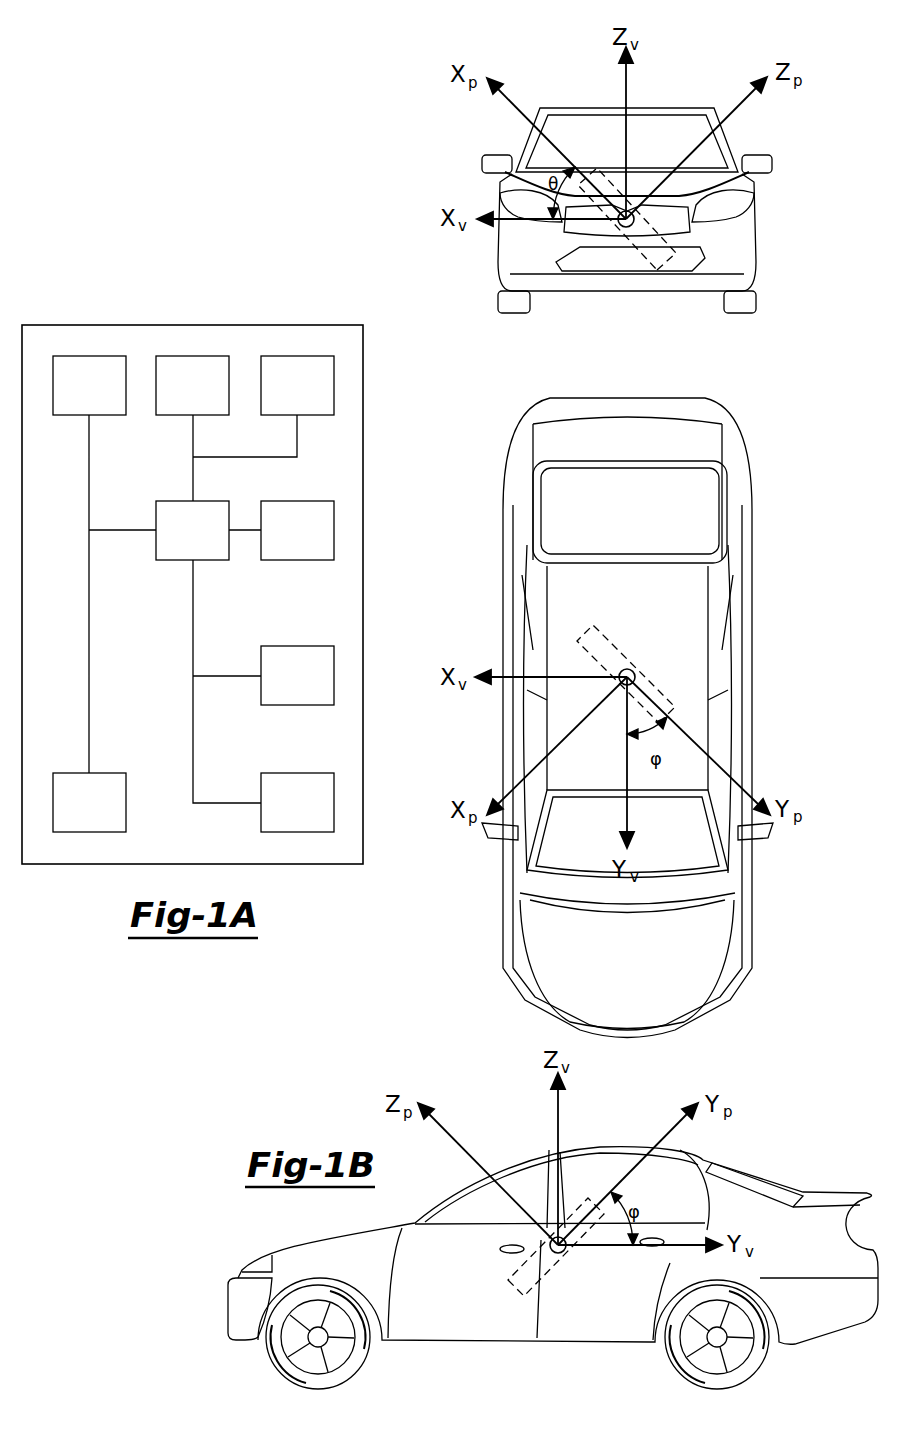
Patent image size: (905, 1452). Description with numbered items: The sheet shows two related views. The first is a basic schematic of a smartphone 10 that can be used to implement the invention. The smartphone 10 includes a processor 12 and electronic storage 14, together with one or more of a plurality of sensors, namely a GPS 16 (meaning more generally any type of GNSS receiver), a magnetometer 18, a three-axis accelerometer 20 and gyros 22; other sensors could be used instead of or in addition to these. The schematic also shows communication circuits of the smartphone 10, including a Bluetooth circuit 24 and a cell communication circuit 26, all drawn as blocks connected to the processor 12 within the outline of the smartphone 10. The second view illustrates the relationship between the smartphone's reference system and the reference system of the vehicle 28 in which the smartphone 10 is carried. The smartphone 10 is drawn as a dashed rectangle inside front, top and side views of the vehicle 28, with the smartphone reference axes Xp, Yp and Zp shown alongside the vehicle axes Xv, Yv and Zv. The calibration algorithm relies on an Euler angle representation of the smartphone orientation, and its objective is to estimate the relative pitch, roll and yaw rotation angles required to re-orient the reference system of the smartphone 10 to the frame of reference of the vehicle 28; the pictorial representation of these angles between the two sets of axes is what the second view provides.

In FIG. 1A, the smartphone 10 is at (136, 325).
In FIG. 1B, the smartphone 10 is at (670, 248).
In FIG. 1A, the processor 12 is at (166, 501).
In FIG. 1A, the electronic storage 14 is at (323, 501).
In FIG. 1A, the GPS 16 is at (89, 356).
In FIG. 1A, the magnetometer 18 is at (193, 356).
In FIG. 1A, the three-axis accelerometer 20 is at (297, 356).
In FIG. 1A, the gyros 22 is at (298, 646).
In FIG. 1A, the Bluetooth 24 is at (298, 773).
In FIG. 1A, the cell communication circuit 26 is at (116, 773).
In FIG. 1B, the vehicle 28 is at (756, 190).